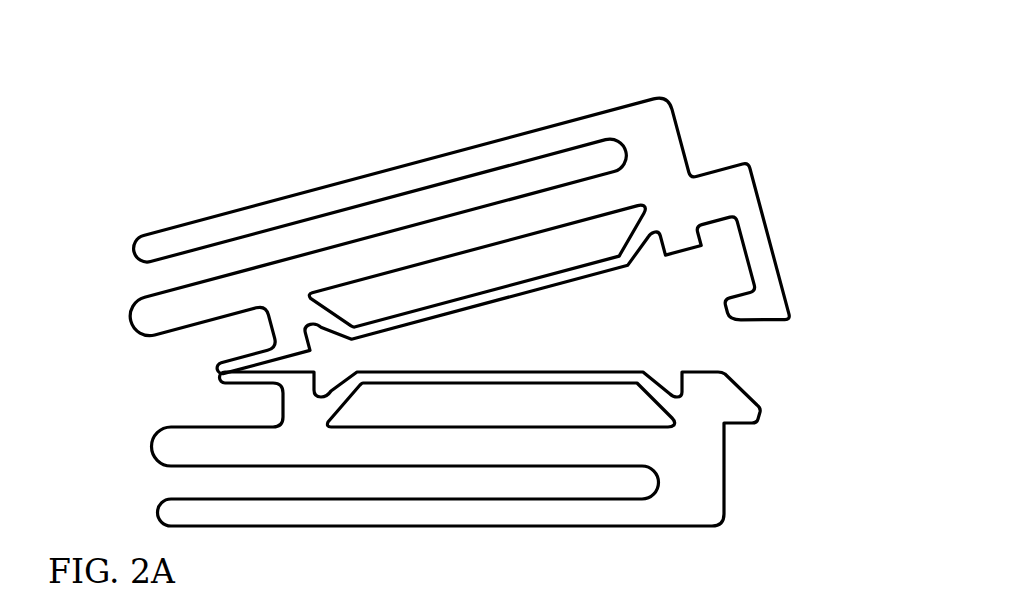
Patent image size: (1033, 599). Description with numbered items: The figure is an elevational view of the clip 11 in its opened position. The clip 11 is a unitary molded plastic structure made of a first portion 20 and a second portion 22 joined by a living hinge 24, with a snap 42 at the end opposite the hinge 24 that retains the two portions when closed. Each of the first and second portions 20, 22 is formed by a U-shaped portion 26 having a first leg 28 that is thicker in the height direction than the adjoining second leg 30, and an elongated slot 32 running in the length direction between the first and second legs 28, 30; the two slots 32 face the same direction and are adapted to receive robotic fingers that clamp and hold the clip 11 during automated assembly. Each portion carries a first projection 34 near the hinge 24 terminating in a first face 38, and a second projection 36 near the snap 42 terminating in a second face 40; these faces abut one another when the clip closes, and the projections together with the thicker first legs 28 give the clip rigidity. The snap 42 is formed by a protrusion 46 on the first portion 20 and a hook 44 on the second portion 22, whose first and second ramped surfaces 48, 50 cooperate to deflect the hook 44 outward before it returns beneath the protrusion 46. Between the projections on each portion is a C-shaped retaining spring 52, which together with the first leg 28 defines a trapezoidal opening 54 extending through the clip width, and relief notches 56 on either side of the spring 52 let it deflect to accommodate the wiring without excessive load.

The clip 11 is at (740, 75).
The first portion 20 is at (778, 452).
The second portion 22 is at (755, 105).
The living hinge 24 is at (293, 373).
The U-shaped portion 26 is at (727, 512).
The first leg 28 is at (675, 115).
The second leg 30 is at (420, 165).
The elongated slot 32 is at (380, 215).
The first projection 34 is at (300, 343).
The second projection 36 is at (683, 237).
The first face 38 is at (285, 335).
The second face 40 is at (700, 258).
The snap 42 is at (815, 192).
The hook 44 is at (773, 290).
The protrusion 46 is at (753, 421).
The first ramped surface 48 is at (745, 388).
The second ramped surface 50 is at (790, 335).
The retaining spring 52 is at (493, 297).
The opening 54 is at (552, 257).
The relief notch 56 is at (293, 340).